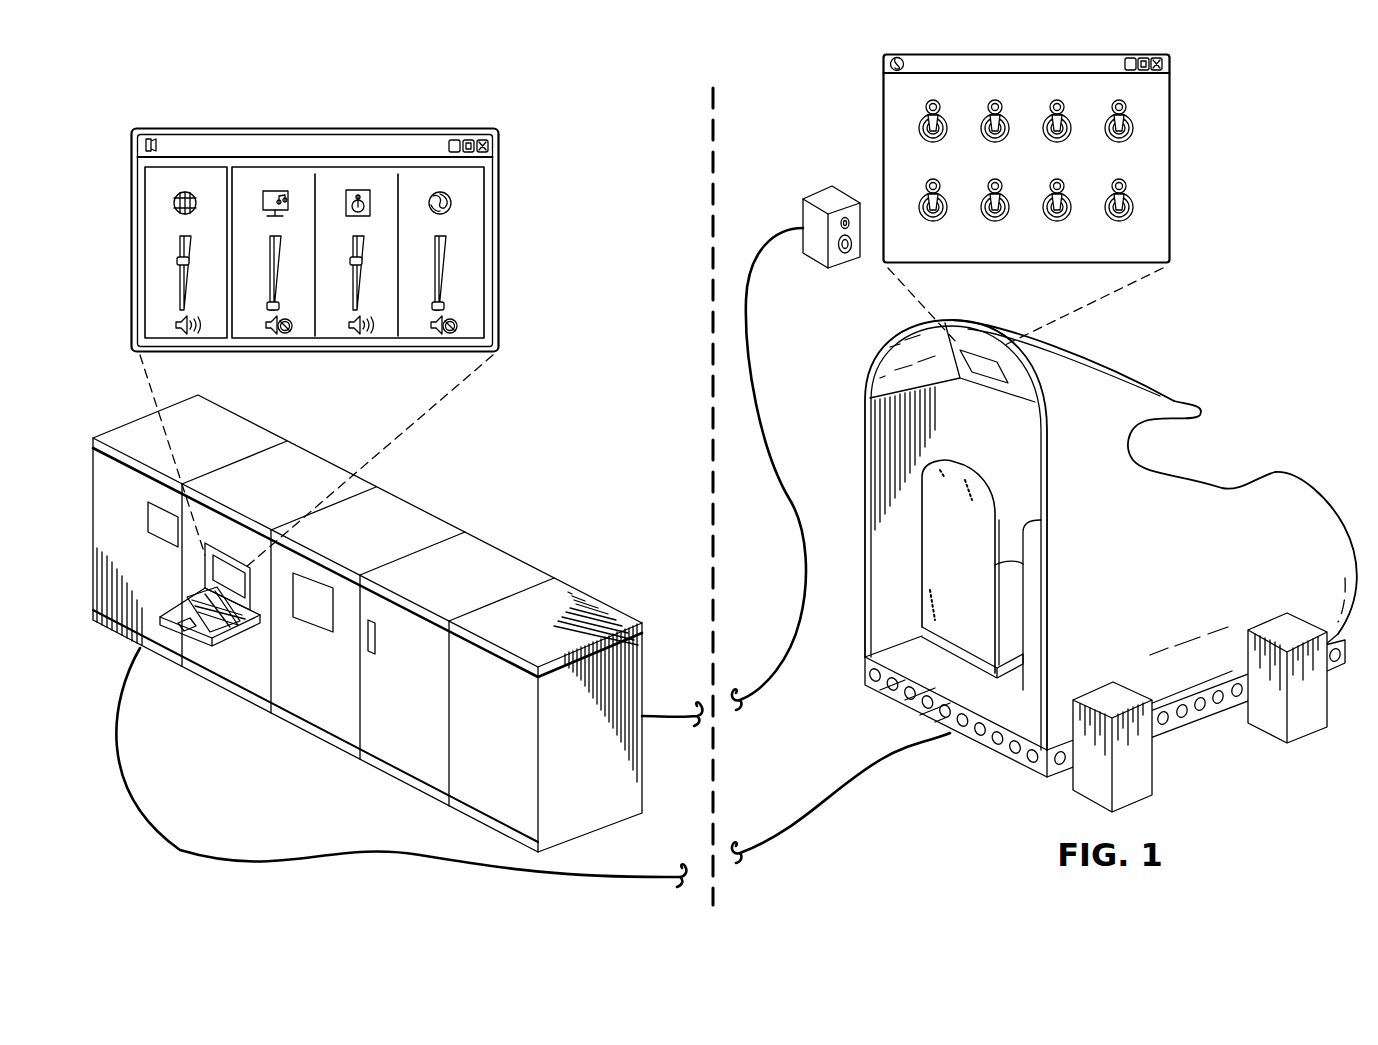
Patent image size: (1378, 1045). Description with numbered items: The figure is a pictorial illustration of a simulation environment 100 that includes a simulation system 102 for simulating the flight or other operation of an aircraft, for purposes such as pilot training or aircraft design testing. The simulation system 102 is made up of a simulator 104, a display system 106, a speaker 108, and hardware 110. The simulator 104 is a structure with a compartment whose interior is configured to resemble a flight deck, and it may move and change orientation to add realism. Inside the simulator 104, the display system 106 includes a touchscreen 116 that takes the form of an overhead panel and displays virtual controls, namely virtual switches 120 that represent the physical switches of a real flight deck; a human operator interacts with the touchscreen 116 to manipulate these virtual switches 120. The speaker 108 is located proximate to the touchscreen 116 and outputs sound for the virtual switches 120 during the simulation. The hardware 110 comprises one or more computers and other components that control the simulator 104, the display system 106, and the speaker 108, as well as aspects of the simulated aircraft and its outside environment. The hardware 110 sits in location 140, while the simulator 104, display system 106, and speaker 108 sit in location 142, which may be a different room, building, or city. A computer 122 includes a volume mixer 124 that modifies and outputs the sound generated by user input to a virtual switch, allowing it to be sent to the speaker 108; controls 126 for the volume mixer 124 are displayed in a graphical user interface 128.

The simulation environment 100 is at (1044, 482).
The simulation system 102 is at (1044, 571).
The simulator 104 is at (1229, 449).
The display system 106 is at (855, 345).
The speaker 108 is at (822, 197).
The hardware 110 is at (504, 552).
The touchscreen 116 is at (1065, 159).
The virtual switches 120 is at (1143, 129).
The computer 122 is at (166, 596).
The volume mixer 124 is at (314, 235).
The controls 126 is at (272, 336).
The graphical user interface 128 is at (315, 235).
The location 140 is at (663, 101).
The location 142 is at (726, 101).